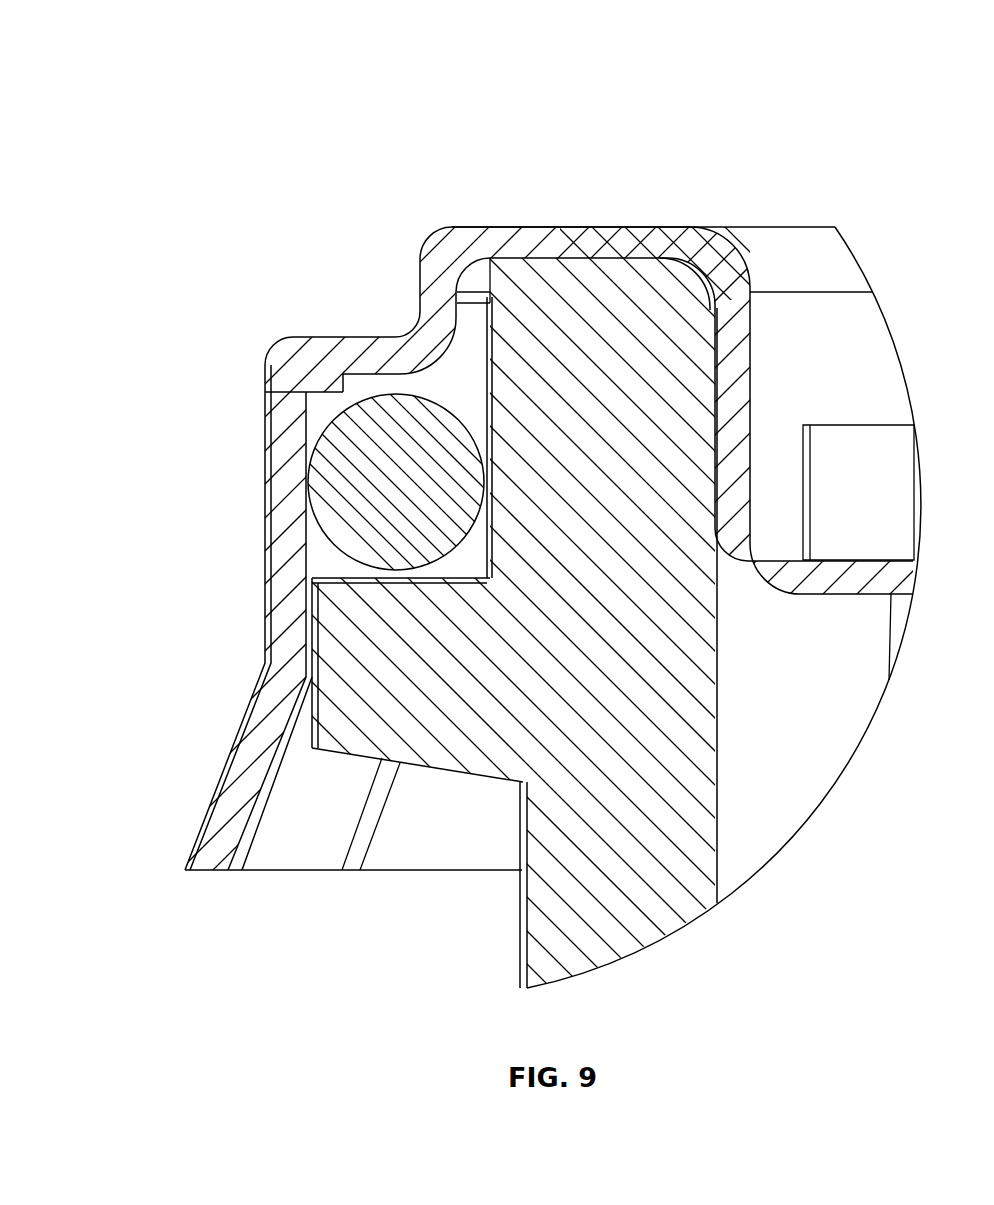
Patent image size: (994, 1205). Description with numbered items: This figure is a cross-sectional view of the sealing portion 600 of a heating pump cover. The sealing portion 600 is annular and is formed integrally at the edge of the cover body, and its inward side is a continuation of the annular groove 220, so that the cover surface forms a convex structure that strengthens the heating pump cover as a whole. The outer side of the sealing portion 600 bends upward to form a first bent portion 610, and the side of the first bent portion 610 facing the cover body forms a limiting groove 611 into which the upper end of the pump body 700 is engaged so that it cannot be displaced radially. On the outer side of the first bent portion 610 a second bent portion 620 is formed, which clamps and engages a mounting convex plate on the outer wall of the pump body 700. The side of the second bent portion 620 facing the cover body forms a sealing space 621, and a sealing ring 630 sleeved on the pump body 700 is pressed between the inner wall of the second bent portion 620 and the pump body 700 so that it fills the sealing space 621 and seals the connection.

The annular groove 220 is at (824, 340).
The sealing portion 600 is at (497, 602).
The first bent portion 610 is at (433, 307).
The limiting groove 611 is at (470, 258).
The second bent portion 620 is at (206, 617).
The sealing space 621 is at (343, 387).
The sealing ring 630 is at (347, 508).
The pump body 700 is at (613, 305).